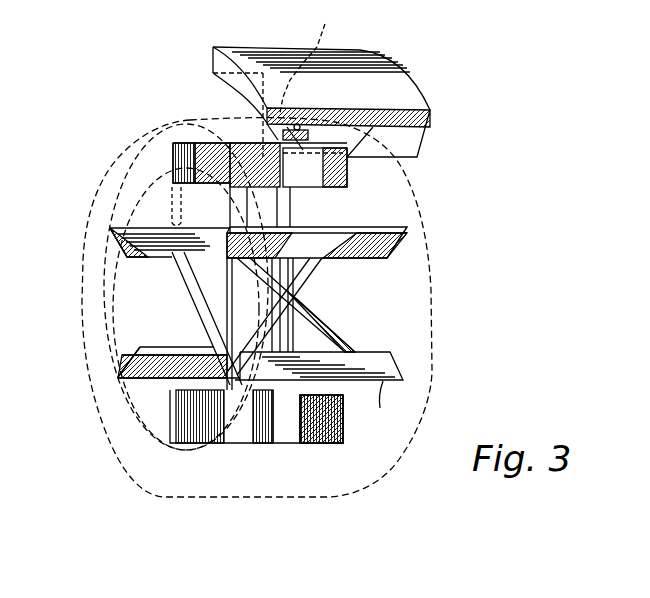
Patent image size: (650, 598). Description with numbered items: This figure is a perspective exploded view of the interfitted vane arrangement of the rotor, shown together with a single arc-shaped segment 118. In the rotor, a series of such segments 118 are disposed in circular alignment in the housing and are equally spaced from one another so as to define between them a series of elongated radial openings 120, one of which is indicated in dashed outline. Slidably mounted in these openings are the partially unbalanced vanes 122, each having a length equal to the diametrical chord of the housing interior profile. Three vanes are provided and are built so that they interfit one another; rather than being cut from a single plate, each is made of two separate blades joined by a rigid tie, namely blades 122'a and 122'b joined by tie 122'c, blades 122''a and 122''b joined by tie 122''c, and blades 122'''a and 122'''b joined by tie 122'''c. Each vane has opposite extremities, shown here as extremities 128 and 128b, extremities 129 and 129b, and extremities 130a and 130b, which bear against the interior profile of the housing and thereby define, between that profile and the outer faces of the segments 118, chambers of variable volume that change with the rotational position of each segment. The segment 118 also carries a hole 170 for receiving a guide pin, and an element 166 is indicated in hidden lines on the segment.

The arc-shaped segment 118 is at (382, 77).
The elongated radial opening 120 is at (115, 170).
The partially unbalanced vane 122 is at (361, 357).
The blade of first vane 122'a is at (289, 460).
The blade of second vane 122''a is at (329, 354).
The blade of third vane 122'''a is at (360, 225).
The blade of first vane 122'b is at (160, 184).
The blade of second vane 122''b is at (83, 250).
The blade of third vane 122'''b is at (137, 370).
The rigid tie 122'c is at (318, 305).
The rigid tie 122''c is at (193, 318).
The rigid tie 122'''c is at (309, 316).
The vane extremity 128 is at (217, 445).
The vane extremity 128b is at (230, 143).
The vane extremity 129 is at (384, 405).
The vane extremity 129b is at (160, 202).
The vane extremity 130a is at (357, 227).
The vane extremity 130b is at (142, 378).
The hidden member 166 is at (310, 58).
The hole 170 is at (274, 100).